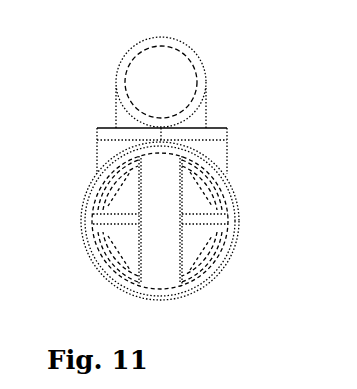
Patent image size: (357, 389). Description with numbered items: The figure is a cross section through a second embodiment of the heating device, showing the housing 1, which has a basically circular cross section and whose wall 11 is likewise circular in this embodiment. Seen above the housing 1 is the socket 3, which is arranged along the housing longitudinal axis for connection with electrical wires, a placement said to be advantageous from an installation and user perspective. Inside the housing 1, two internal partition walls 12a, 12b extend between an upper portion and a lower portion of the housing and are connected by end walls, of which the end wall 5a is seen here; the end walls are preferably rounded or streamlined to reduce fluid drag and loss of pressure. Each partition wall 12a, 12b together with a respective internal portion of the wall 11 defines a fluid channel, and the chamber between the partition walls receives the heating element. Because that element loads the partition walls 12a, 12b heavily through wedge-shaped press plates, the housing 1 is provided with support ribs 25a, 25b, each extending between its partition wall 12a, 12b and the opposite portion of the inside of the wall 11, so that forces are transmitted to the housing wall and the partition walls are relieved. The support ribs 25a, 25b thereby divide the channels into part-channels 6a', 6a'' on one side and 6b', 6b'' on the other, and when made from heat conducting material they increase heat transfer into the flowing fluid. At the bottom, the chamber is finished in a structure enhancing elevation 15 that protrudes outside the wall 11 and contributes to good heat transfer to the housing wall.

The housing 1 is at (128, 158).
The socket 3 is at (200, 71).
The end wall 5a is at (170, 226).
The part-channel 6a' is at (118, 185).
The part-channel 6b' is at (202, 185).
The part-channel 6a'' is at (118, 257).
The part-channel 6b'' is at (202, 257).
The wall of the housing 11 is at (205, 282).
The partition wall 12a is at (89, 229).
The partition wall 12b is at (227, 217).
The structure enhancing elevation 15 is at (170, 297).
The support rib 25a is at (80, 239).
The support rib 25b is at (239, 238).